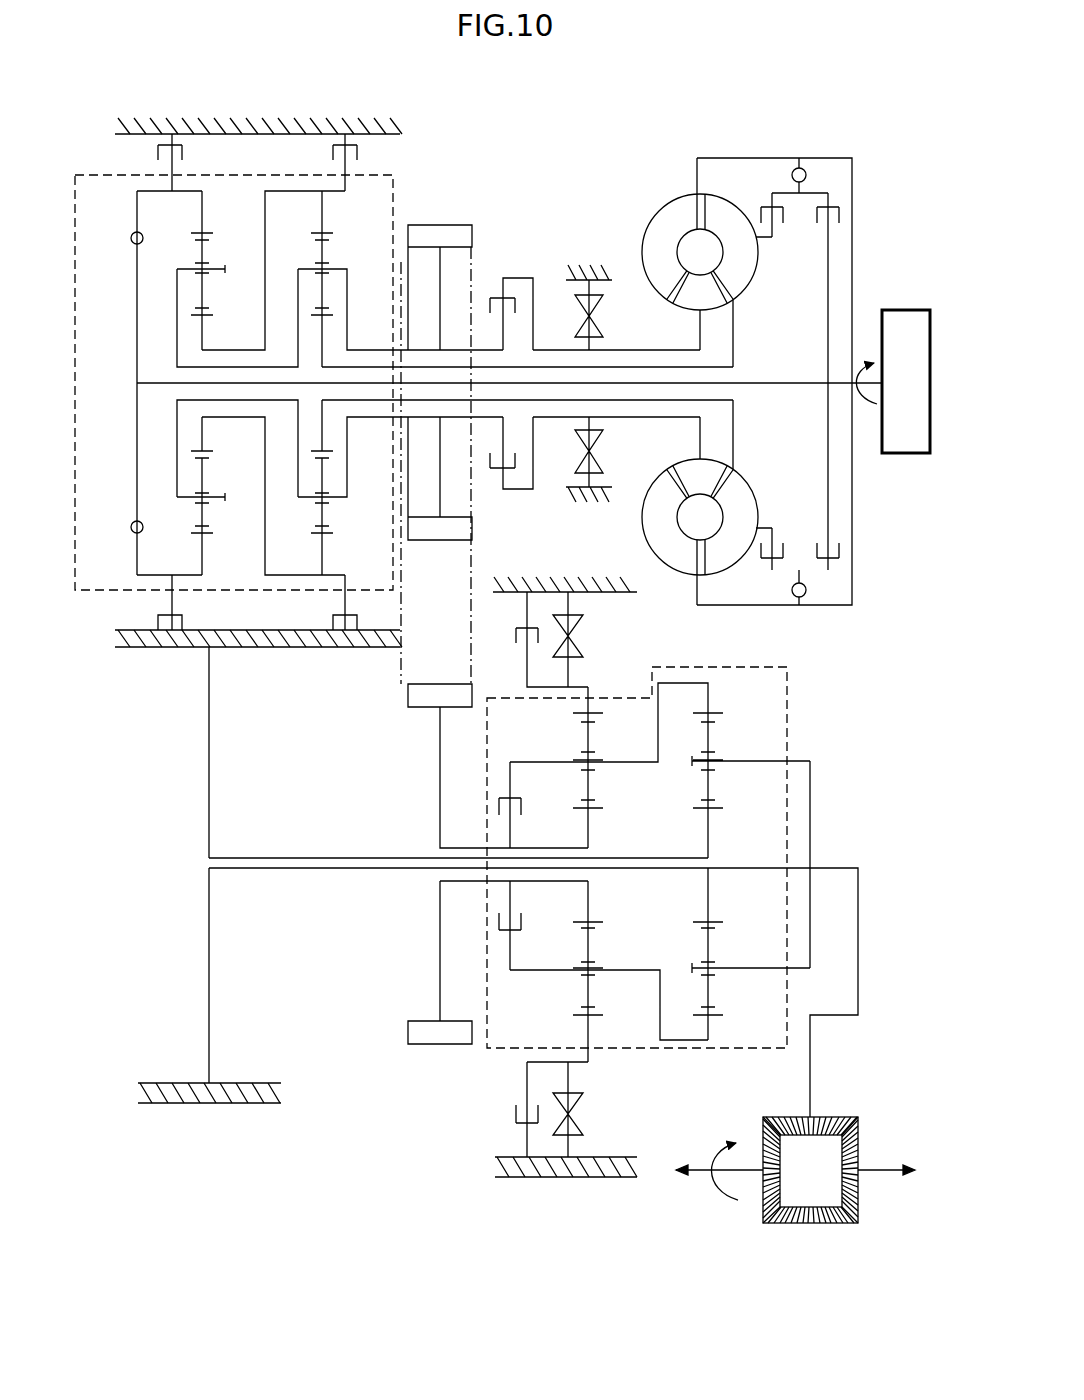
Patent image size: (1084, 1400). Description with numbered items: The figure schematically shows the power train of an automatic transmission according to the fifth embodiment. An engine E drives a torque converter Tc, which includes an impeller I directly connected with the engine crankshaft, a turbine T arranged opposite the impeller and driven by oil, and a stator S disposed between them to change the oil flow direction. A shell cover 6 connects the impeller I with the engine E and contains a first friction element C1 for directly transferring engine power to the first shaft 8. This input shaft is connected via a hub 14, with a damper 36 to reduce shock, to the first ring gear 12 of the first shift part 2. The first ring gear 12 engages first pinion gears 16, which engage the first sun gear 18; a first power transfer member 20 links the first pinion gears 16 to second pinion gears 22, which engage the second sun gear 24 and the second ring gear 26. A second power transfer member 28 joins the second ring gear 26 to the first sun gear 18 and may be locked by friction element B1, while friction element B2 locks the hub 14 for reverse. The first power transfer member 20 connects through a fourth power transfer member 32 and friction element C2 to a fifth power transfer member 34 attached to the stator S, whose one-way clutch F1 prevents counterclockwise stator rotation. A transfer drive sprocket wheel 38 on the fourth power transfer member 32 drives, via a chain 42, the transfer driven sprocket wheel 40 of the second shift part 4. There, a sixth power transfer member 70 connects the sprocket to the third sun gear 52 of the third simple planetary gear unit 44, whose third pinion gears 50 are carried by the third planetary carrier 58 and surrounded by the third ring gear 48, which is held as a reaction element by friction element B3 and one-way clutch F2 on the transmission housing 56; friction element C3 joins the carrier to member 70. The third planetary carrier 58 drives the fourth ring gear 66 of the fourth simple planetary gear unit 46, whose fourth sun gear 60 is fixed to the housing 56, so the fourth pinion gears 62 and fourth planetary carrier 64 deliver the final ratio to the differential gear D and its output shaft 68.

The first shift part 2 is at (90, 175).
The second shift part 4 is at (793, 728).
The shell cover 6 is at (783, 158).
The first shaft 8 is at (784, 382).
The first ring gear 12 is at (197, 233).
The hub 14 is at (137, 319).
The first pinion gears 16 is at (207, 301).
The first sun gear 18 is at (205, 319).
The first power transfer member 20 is at (190, 368).
The second pinion gears 22 is at (327, 246).
The second sun gear 24 is at (326, 338).
The second ring gear 26 is at (321, 233).
The second power transfer member 28 is at (265, 224).
The fourth power transfer member 32 is at (348, 297).
The fifth power transfer member 34 is at (560, 350).
The damper 36 is at (131, 240).
The transfer drive sprocket wheel 38 is at (474, 238).
The transfer driven sprocket wheel 40 is at (408, 697).
The chain 42 is at (474, 512).
The third simple planetary gear unit 44 is at (599, 986).
The fourth simple planetary gear unit 46 is at (727, 1005).
The third ring gear 48 is at (580, 715).
The third pinion gears 50 is at (593, 748).
The third sun gear 52 is at (590, 813).
The transmission housing 56 is at (271, 134).
The third planetary carrier 58 is at (656, 764).
The fourth sun gear 60 is at (717, 813).
The fourth pinion gears 62 is at (717, 749).
The fourth planetary carrier 64 is at (860, 952).
The fourth ring gear 66 is at (714, 714).
The output shaft 68 is at (869, 1168).
The sixth power transfer member 70 is at (438, 788).
The second friction element B1 is at (361, 382).
The third friction element B2 is at (186, 382).
The sixth friction element B3 is at (535, 639).
The first friction element C1 is at (800, 381).
The fourth friction element C2 is at (504, 383).
The fifth friction element C3 is at (528, 866).
The first one-way clutch F1 is at (603, 383).
The second one-way clutch F2 is at (582, 639).
The torque converter Tc is at (717, 355).
The impeller I is at (660, 229).
The turbine T is at (750, 266).
The stator S is at (688, 307).
The engine E is at (893, 381).
The differential gear D is at (864, 1106).